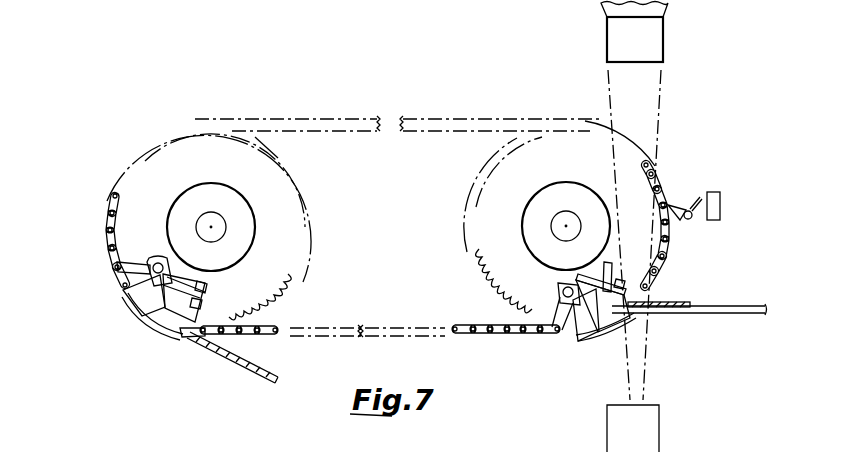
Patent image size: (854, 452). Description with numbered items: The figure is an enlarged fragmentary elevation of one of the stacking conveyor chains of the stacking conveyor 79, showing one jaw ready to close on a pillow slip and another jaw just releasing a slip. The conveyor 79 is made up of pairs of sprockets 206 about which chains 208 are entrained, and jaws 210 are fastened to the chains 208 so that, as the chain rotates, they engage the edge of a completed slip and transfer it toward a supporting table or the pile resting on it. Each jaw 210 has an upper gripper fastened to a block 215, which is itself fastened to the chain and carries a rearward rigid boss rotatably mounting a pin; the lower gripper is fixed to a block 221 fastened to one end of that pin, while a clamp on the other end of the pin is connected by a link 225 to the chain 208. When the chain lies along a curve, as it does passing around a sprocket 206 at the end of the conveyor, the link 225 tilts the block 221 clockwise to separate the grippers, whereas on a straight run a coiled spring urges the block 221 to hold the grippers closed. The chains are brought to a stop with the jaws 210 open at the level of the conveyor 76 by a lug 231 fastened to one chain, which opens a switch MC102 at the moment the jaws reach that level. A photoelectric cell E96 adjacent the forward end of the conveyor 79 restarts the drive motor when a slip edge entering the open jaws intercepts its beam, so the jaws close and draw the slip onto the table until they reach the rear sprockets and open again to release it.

The chain 208 is at (326, 126).
The stacking conveyor 79 is at (449, 118).
The sprocket 206 is at (284, 250).
The link 225 is at (540, 297).
The lug 231 is at (678, 185).
The photoelectric cell E96 is at (648, 42).
The switch MC102 is at (743, 172).
The block 215 is at (650, 298).
The conveyor 76 is at (703, 313).
The block 221 is at (578, 330).
The jaw 210 is at (150, 338).